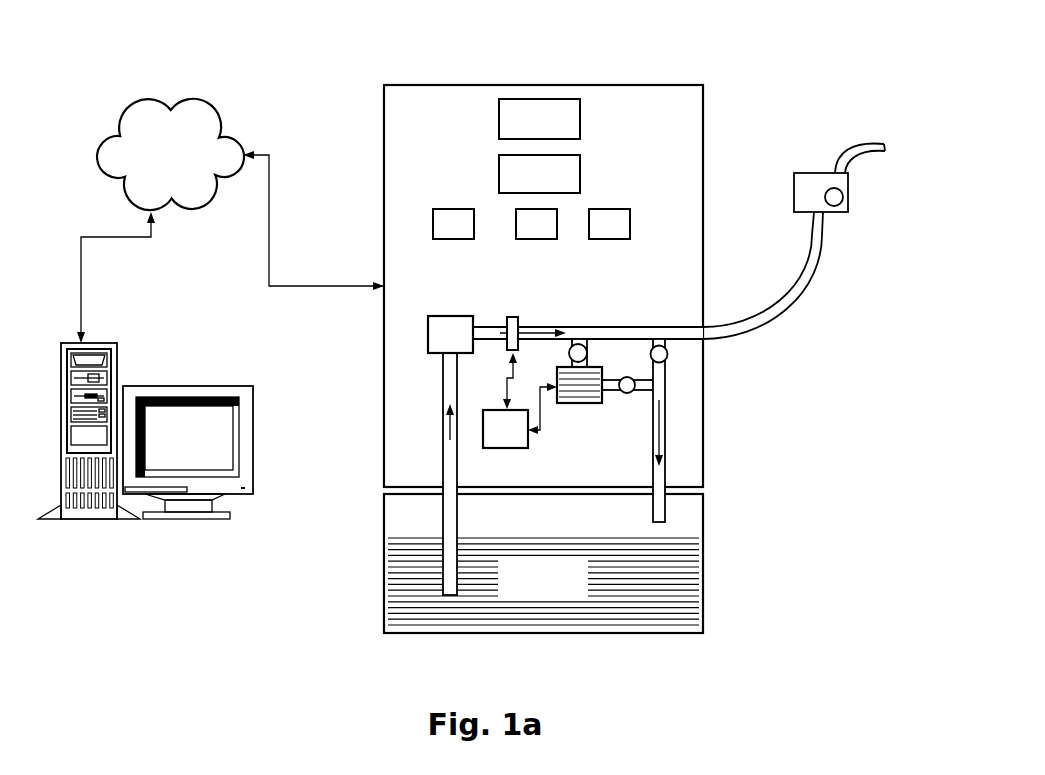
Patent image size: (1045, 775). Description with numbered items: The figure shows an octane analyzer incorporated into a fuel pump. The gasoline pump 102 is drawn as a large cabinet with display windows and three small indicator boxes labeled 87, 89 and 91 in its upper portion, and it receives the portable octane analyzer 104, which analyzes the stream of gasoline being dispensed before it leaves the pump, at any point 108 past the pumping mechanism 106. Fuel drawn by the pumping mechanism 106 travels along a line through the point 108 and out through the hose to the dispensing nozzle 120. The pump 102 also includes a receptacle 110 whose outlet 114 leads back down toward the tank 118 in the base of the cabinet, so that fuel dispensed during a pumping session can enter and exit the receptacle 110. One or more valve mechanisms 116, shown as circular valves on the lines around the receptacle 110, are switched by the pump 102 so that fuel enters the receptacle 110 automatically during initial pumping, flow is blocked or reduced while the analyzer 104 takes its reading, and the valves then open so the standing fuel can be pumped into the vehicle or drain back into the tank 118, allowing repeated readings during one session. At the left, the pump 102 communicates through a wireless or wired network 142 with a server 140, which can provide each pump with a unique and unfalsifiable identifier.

The gasoline pump 102 is at (540, 85).
The portable octane analyzer 104 is at (500, 449).
The pumping mechanism 106 is at (428, 332).
The point past the pumping mechanism 108 is at (510, 316).
The receptacle 110 is at (568, 404).
The outlet 114 is at (664, 410).
The valve mechanisms 116 is at (624, 377).
The tank 118 is at (543, 563).
The dispensing nozzle 120 is at (853, 142).
The server 140 is at (185, 386).
The network 142 is at (230, 221).
The indicator 87 is at (453, 224).
The indicator 89 is at (536, 224).
The indicator 91 is at (609, 224).